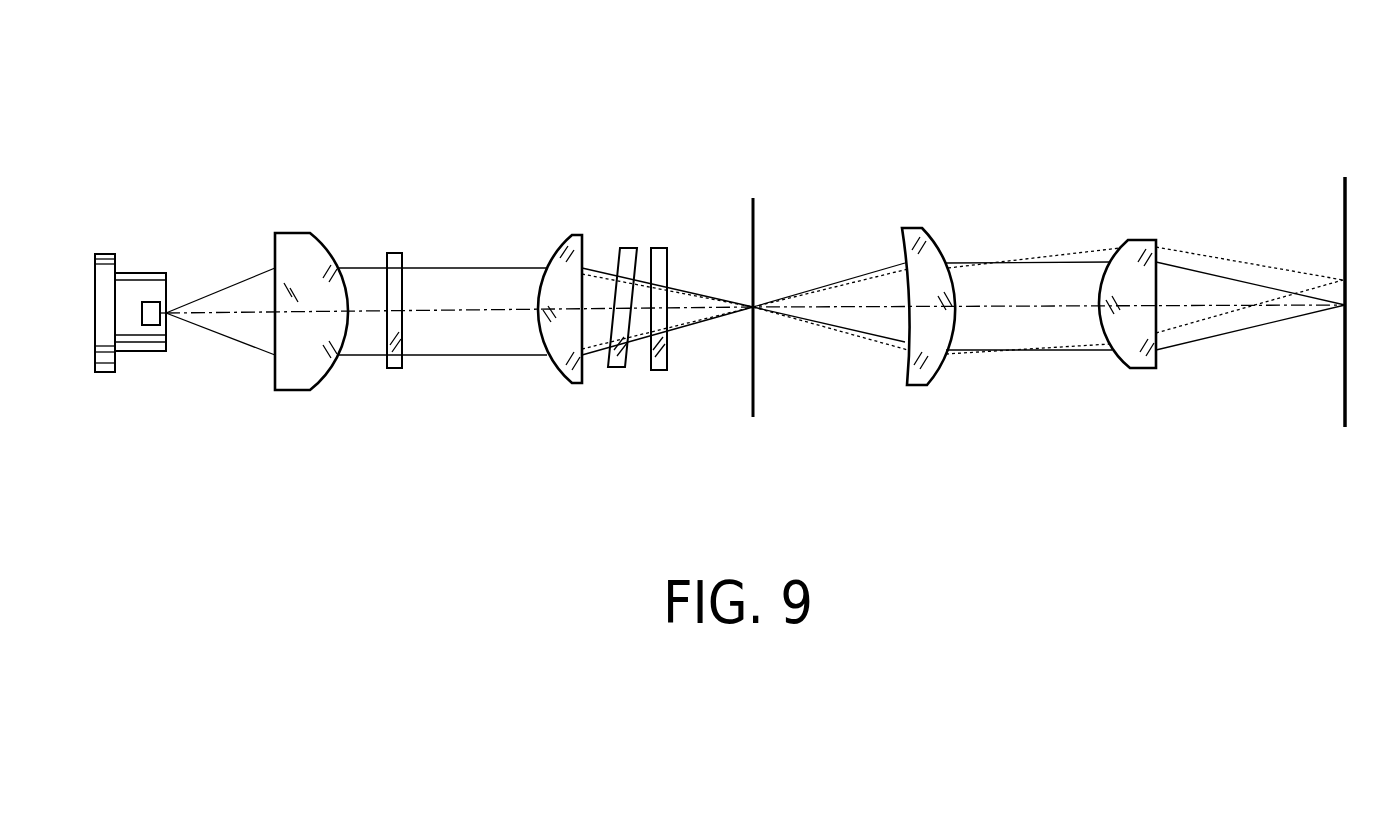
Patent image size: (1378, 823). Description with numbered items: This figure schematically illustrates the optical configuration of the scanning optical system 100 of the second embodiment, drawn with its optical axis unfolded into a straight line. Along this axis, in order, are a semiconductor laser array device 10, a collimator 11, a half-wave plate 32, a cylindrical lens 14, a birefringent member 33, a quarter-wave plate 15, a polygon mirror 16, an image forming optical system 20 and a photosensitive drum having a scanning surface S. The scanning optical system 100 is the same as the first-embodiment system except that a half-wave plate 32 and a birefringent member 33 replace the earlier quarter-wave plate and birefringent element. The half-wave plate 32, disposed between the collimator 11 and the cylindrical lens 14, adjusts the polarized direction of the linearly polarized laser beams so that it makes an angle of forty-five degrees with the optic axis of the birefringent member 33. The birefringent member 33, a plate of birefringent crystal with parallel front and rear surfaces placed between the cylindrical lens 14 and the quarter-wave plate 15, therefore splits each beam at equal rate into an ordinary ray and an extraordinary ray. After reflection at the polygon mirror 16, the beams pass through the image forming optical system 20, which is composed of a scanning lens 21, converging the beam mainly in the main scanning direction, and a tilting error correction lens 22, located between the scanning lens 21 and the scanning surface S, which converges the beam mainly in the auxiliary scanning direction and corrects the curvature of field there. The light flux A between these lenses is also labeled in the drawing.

The scanning optical system 100 is at (1125, 92).
The semiconductor laser array device 10 is at (148, 352).
The collimator 11 is at (276, 250).
The half-wave plate 32 is at (398, 252).
The cylindrical lens 14 is at (553, 338).
The birefringent member 33 is at (628, 250).
The quarter-wave plate 15 is at (666, 262).
The polygon mirror 16 is at (757, 383).
The image forming optical system 20 is at (1167, 153).
The scanning lens 21 is at (915, 228).
The tilting error correction lens 22 is at (1140, 238).
The light flux A is at (1020, 312).
The scanning surface S is at (1343, 217).